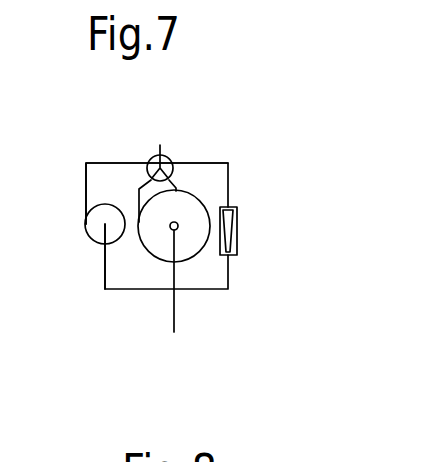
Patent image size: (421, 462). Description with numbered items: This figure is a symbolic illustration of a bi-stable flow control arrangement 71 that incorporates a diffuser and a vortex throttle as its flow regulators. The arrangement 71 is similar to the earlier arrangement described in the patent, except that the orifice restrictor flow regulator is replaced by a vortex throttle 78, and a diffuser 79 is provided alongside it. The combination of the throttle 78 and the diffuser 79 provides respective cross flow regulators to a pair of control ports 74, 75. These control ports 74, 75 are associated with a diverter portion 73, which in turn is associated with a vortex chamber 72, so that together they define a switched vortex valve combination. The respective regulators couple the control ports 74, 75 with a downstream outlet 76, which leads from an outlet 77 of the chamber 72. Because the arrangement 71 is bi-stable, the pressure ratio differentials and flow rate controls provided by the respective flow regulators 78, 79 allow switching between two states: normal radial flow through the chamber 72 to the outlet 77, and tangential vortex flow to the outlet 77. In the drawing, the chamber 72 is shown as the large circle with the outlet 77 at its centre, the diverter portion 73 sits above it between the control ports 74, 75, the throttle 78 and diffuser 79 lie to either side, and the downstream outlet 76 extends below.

The flow control arrangement 71 is at (289, 162).
The vortex chamber 72 is at (187, 243).
The diverter portion 73 is at (167, 157).
The control port 74 is at (110, 163).
The control port 75 is at (208, 163).
The downstream outlet 76 is at (177, 317).
The outlet 77 is at (177, 222).
The vortex throttle 78 is at (97, 237).
The diffuser 79 is at (237, 231).